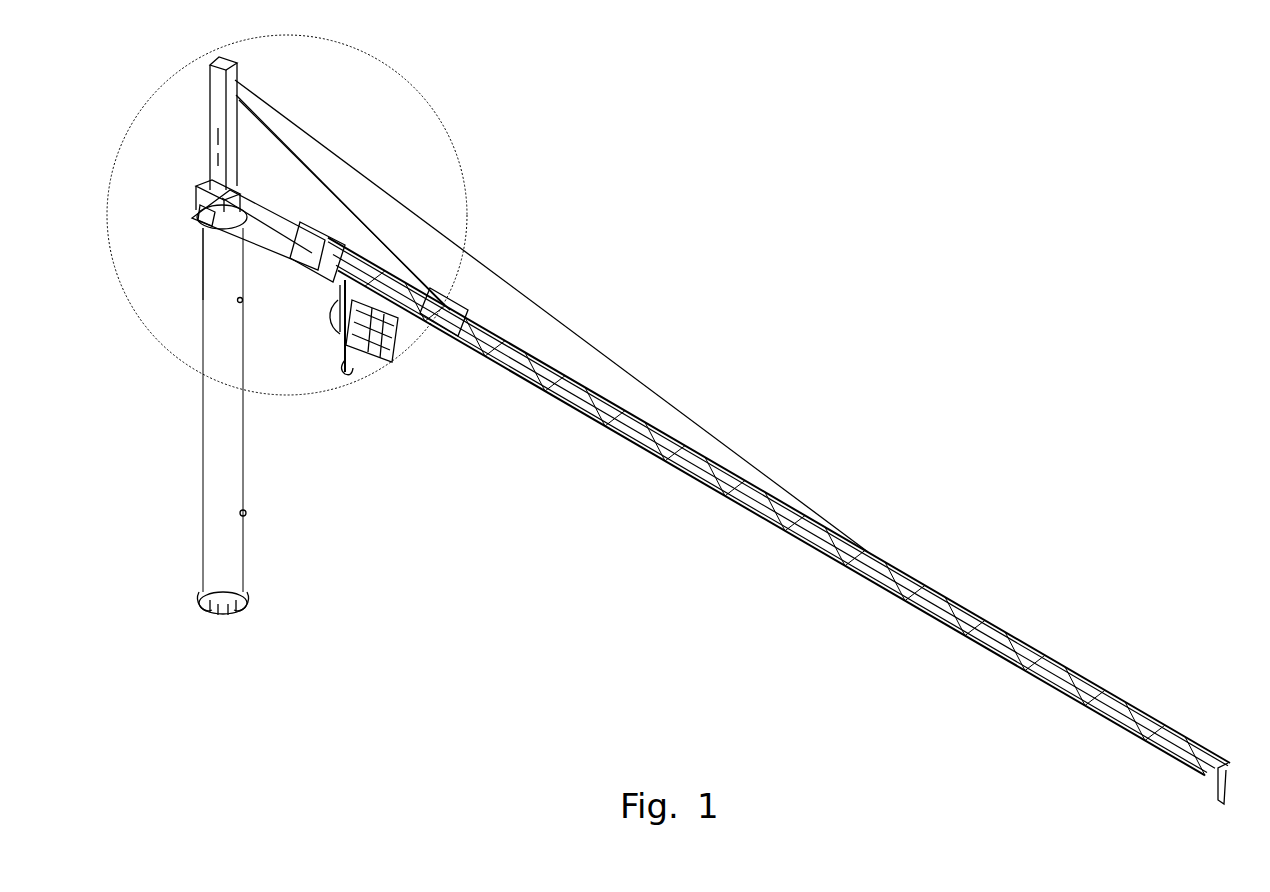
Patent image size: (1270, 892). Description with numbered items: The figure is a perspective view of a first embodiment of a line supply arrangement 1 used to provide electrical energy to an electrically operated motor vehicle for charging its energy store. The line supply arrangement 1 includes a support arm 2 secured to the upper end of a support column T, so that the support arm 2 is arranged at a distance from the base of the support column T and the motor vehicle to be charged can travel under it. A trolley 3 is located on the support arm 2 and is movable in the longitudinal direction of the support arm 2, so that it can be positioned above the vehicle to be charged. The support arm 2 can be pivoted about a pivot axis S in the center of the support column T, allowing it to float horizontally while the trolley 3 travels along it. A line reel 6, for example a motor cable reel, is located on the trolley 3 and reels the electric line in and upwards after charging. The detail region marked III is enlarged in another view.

The line supply arrangement 1 is at (652, 332).
The support arm 2 is at (900, 568).
The trolley 3 is at (343, 368).
The line reel 6 is at (334, 306).
The pivot axis S is at (218, 249).
The support column T is at (213, 512).
The detail region III is at (400, 87).